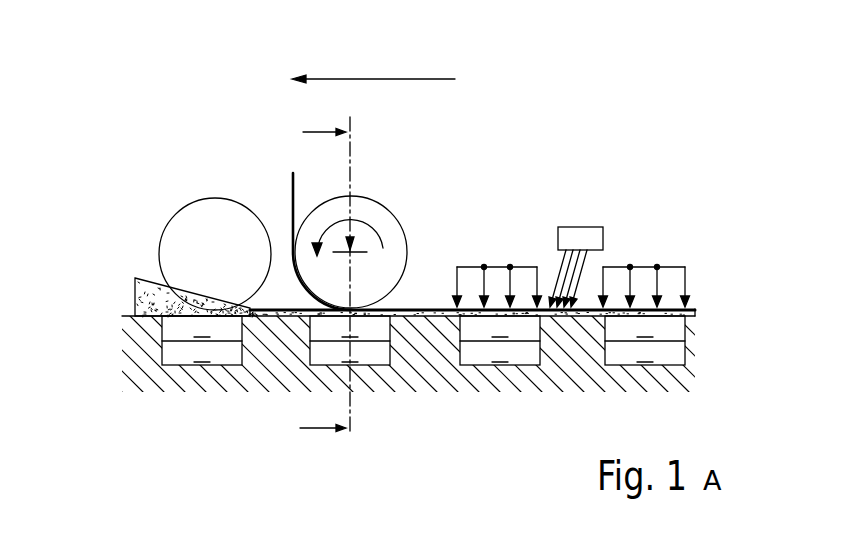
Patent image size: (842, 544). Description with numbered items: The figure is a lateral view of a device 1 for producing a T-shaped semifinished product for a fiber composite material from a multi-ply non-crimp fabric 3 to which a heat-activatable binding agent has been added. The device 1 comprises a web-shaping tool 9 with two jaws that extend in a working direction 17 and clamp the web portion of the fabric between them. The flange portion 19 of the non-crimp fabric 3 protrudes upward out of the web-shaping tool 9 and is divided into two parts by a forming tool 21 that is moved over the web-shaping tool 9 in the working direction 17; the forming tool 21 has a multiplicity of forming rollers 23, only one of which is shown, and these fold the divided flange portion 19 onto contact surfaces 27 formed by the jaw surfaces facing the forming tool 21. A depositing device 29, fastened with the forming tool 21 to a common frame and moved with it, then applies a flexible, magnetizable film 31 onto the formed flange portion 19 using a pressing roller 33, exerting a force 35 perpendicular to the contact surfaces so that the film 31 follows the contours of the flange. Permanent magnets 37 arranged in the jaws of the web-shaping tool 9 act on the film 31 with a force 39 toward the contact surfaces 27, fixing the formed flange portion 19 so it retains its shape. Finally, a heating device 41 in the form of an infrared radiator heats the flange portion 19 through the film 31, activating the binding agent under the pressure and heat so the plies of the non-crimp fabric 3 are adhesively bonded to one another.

The device 1 is at (200, 108).
The non-crimp fabric 3 is at (160, 297).
The web-shaping tool 9 is at (150, 365).
The working direction 17 is at (374, 79).
The flange portion 19 is at (135, 280).
The forming tool 21 is at (152, 166).
The forming roller 23 is at (170, 226).
The contact surface 27 is at (152, 318).
The depositing device 29 is at (366, 154).
The magnetizable film 31 is at (296, 201).
The pressing roller 33 is at (392, 212).
The force 35 is at (352, 192).
The permanent magnets 37 is at (243, 362).
The force 39 is at (500, 267).
The heating device 41 is at (571, 227).